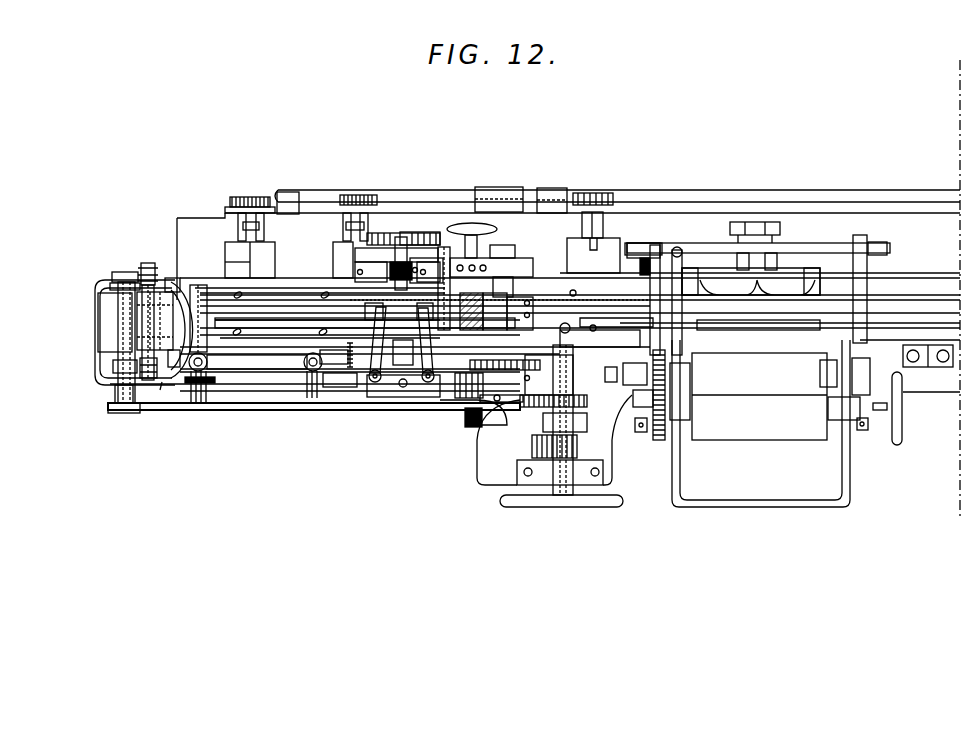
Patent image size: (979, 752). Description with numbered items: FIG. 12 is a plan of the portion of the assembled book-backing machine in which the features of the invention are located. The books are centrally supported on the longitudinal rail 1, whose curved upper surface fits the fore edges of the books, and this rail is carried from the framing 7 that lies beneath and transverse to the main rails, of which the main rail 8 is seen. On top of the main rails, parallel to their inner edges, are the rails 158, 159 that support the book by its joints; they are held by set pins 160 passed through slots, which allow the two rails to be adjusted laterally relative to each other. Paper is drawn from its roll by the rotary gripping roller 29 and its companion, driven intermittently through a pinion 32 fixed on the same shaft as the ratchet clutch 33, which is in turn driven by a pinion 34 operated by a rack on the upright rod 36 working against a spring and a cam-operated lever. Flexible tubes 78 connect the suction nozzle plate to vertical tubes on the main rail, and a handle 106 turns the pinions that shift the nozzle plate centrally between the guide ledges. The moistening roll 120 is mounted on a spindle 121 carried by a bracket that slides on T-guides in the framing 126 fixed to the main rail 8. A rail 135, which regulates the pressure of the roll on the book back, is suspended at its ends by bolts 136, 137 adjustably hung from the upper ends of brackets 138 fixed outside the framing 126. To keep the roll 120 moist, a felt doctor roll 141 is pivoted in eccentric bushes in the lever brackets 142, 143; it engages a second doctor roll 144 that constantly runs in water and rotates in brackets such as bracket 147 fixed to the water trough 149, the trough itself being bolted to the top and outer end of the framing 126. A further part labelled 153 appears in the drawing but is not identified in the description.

The longitudinal rail 1 is at (947, 308).
The framing 7 is at (720, 318).
The main rail 8 is at (592, 241).
The rotary gripping roller 29 is at (495, 311).
The pinion 32 is at (450, 400).
The ratchet clutch 33 is at (462, 397).
The pinion 34 is at (480, 383).
The upright rod 36 is at (453, 398).
The flexible tubes 78 is at (416, 321).
The handle 106 is at (350, 360).
The roll 120 is at (130, 315).
The spindle 121 is at (170, 273).
The framing 126 is at (334, 370).
The rail 135 is at (257, 361).
The bolt 136 is at (208, 362).
The bolt 137 is at (303, 362).
The brackets 138 is at (205, 395).
The doctor roll 141 is at (137, 308).
The lever bracket 142 is at (140, 367).
The lever bracket 143 is at (112, 280).
The doctor roll 144 is at (112, 328).
The bracket 147 is at (120, 272).
The water trough 149 is at (102, 353).
The base plate 153 is at (221, 410).
The rail 158 is at (298, 334).
The rail 159 is at (216, 283).
The set pins 160 is at (240, 294).